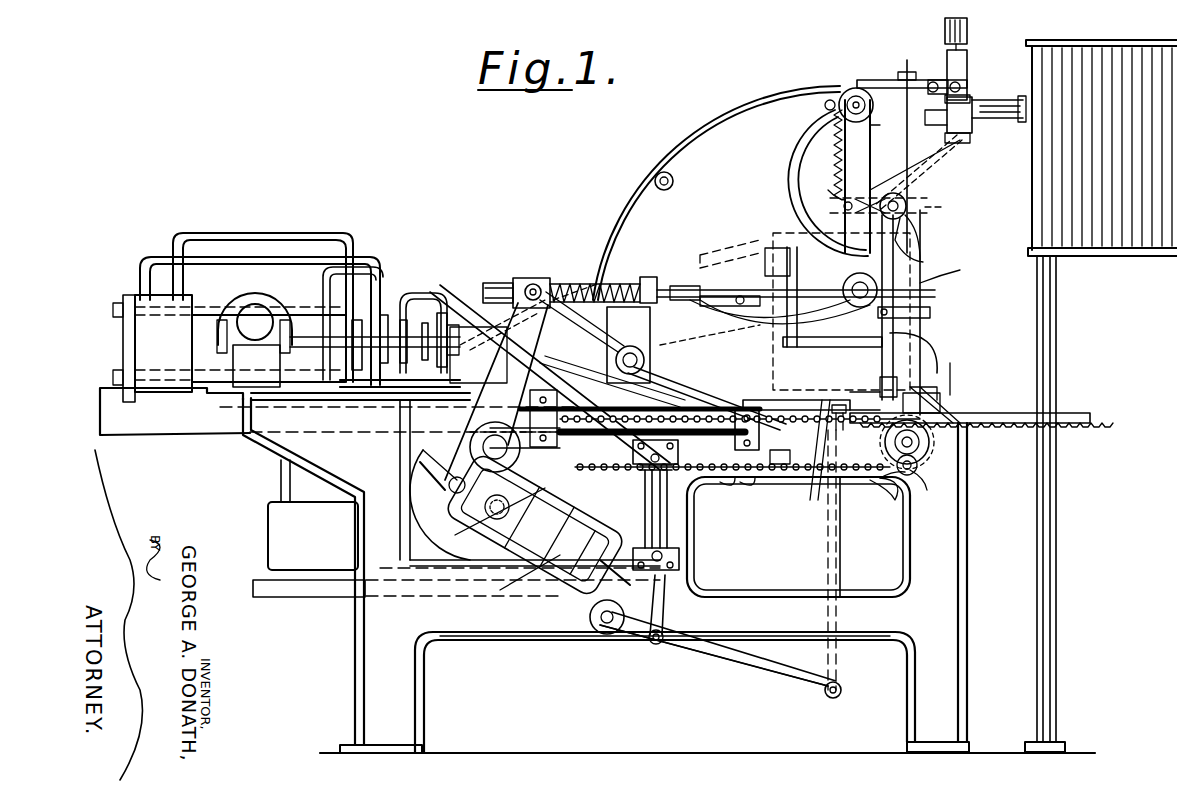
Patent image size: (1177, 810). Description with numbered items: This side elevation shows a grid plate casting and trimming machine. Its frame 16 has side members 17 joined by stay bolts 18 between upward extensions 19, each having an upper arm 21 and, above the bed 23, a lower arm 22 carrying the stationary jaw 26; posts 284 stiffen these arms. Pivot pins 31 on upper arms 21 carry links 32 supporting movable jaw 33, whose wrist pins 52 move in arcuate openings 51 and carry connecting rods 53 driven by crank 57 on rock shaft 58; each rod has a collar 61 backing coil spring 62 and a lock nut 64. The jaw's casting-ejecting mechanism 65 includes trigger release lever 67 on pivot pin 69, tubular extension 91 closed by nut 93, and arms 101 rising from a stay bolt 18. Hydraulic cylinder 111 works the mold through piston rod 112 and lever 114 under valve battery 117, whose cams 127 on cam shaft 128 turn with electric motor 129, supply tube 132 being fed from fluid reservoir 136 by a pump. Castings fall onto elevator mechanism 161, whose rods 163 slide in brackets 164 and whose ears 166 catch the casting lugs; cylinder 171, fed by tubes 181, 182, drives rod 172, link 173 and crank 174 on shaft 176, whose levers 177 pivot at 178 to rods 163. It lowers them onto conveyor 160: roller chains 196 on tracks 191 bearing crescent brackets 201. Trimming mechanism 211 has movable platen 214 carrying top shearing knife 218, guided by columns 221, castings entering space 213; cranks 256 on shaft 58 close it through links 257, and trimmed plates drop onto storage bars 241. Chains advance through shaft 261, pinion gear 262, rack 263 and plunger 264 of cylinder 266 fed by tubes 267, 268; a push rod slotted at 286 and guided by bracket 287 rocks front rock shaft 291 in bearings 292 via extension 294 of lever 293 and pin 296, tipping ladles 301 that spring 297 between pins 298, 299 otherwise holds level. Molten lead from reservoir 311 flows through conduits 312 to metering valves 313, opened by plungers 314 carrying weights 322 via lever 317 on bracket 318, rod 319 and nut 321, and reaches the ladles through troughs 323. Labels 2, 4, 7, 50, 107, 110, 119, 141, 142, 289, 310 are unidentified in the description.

The section line 2 is at (388, 135).
The section line 4 is at (955, 240).
The section line 7 is at (417, 457).
The frame 16 is at (352, 647).
The side members 17 is at (520, 625).
The stay bolts 18 is at (668, 178).
The upward extensions 19 is at (630, 195).
The upper arm 21 is at (848, 92).
The lower arm 22 is at (866, 330).
The bed 23 is at (762, 405).
The stationary jaw 26 is at (950, 378).
The pivot pins 31 is at (836, 150).
The links 32 is at (865, 165).
The movable jaw 33 is at (780, 325).
The pivot block 50 is at (538, 286).
The openings 51 is at (778, 248).
The wrist pins 52 is at (920, 294).
The connecting rod 53 is at (727, 305).
The crank 57 is at (492, 282).
The rock shaft 58 is at (494, 440).
The collar 61 is at (655, 278).
The coil spring 62 is at (594, 278).
The lock nut 64 is at (540, 280).
The casting-ejecting mechanism 65 is at (755, 328).
The trigger release lever 67 is at (750, 265).
The pivot pin 69 is at (504, 283).
The tubular extension 91 is at (738, 310).
The nut 93 is at (690, 303).
The arms 101 is at (655, 350).
The sprocket 107 is at (935, 448).
The base plate 110 is at (172, 418).
The hydraulic cylinder 111 is at (207, 318).
The piston rod 112 is at (425, 322).
The lever 114 is at (530, 362).
The battery of hydraulic valves 117 is at (414, 275).
The lever 119 is at (470, 300).
The cam 127 is at (386, 312).
The cam shaft 128 is at (336, 375).
The electric motor 129 is at (268, 300).
The manifold supply tube 132 is at (200, 232).
The fluid reservoir 136 is at (272, 526).
The guard loop 141 is at (163, 255).
The bracket 142 is at (366, 268).
The conveyor 160 is at (800, 479).
The elevator mechanism 161 is at (848, 515).
The vertical rods 163 is at (828, 540).
The brackets 164 is at (832, 500).
The ears 166 is at (836, 405).
The second hydraulic working cylinder 171 is at (680, 520).
The rod 172 is at (680, 580).
The link 173 is at (670, 618).
The crank 174 is at (650, 636).
The transverse shaft 176 is at (605, 630).
The lever 177 is at (752, 680).
The pivot 178 is at (840, 690).
The tube 181 is at (612, 468).
The tube 182 is at (398, 448).
The tracks 191 is at (272, 380).
The roller chain 196 is at (748, 478).
The crescent shaped brackets 201 is at (850, 480).
The trimming mechanism 211 is at (472, 568).
The space 213 is at (528, 565).
The movable platen 214 is at (478, 528).
The top shearing knife 218 is at (592, 522).
The columns 221 is at (585, 548).
The storage bars 241 is at (338, 598).
The cranks 256 is at (460, 476).
The link 257 is at (485, 506).
The shaft 261 is at (945, 405).
The pinion gear 262 is at (935, 460).
The rack 263 is at (1078, 422).
The plunger 264 is at (798, 430).
The hydraulic working cylinder 266 is at (700, 442).
The tube 267 is at (680, 398).
The tube 268 is at (466, 380).
The post 284 is at (925, 345).
The slot 286 is at (900, 470).
The bracket 287 is at (930, 316).
The link 289 is at (925, 290).
The rock shaft 291 is at (910, 215).
The bearings 292 is at (922, 260).
The levers 293 is at (848, 208).
The forward extension 294 is at (905, 208).
The pin 296 is at (945, 210).
The coil spring 297 is at (822, 191).
The pin 298 is at (802, 186).
The pin 299 is at (824, 108).
The ladles 301 is at (870, 190).
The valve 310 is at (962, 60).
The reservoir 311 is at (1101, 148).
The conduits 312 is at (998, 108).
The metering valves 313 is at (972, 85).
The plunger 314 is at (942, 60).
The lever 317 is at (945, 85).
The bracket 318 is at (946, 120).
The rod 319 is at (888, 117).
The nut 321 is at (897, 72).
The weight 322 is at (968, 32).
The trough 323 is at (968, 145).